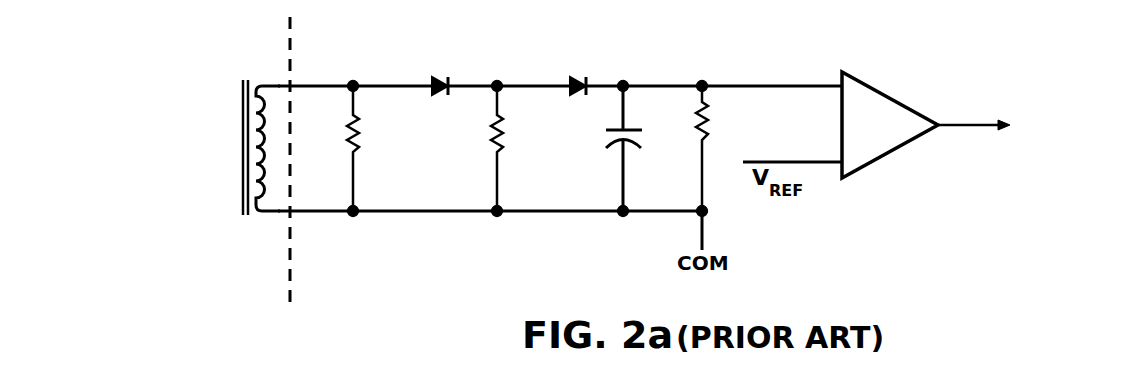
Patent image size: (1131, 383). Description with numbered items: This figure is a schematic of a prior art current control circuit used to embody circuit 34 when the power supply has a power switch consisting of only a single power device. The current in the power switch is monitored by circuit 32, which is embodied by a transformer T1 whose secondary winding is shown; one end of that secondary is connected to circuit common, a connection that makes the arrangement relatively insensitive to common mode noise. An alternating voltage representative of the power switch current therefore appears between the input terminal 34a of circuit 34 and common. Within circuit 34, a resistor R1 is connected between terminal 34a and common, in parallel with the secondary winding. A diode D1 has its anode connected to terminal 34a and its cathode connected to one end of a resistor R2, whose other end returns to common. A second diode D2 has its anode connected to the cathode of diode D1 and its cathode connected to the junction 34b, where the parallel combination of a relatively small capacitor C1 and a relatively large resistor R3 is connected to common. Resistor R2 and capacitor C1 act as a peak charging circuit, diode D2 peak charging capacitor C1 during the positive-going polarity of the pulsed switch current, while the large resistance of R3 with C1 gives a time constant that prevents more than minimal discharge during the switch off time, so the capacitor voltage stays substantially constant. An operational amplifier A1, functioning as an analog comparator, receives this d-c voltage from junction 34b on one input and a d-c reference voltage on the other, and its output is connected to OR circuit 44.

The current monitoring circuit 32 is at (218, 124).
The transformer T1 is at (256, 139).
The current control circuit 34 is at (560, 118).
The input terminal 34a is at (351, 68).
The junction 34b is at (719, 70).
The resistor R1 is at (371, 148).
The resistor R2 is at (516, 148).
The resistor R3 is at (721, 148).
The diode D1 is at (444, 99).
The diode D2 is at (583, 99).
The capacitor C1 is at (642, 148).
The operational amplifier A1 is at (890, 125).
The OR circuit 44 is at (1009, 127).